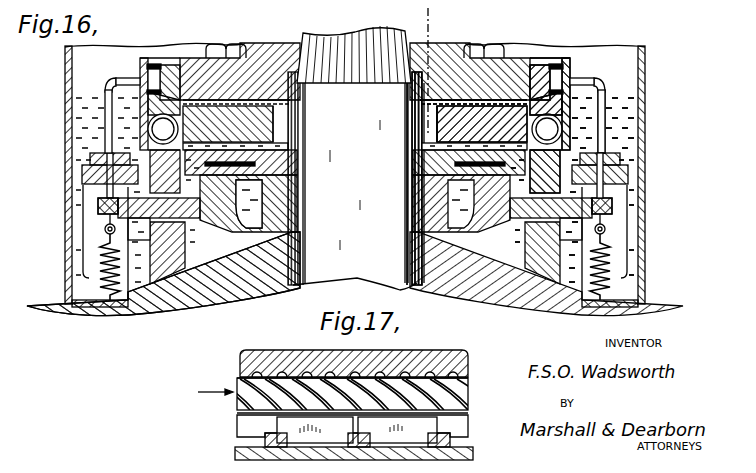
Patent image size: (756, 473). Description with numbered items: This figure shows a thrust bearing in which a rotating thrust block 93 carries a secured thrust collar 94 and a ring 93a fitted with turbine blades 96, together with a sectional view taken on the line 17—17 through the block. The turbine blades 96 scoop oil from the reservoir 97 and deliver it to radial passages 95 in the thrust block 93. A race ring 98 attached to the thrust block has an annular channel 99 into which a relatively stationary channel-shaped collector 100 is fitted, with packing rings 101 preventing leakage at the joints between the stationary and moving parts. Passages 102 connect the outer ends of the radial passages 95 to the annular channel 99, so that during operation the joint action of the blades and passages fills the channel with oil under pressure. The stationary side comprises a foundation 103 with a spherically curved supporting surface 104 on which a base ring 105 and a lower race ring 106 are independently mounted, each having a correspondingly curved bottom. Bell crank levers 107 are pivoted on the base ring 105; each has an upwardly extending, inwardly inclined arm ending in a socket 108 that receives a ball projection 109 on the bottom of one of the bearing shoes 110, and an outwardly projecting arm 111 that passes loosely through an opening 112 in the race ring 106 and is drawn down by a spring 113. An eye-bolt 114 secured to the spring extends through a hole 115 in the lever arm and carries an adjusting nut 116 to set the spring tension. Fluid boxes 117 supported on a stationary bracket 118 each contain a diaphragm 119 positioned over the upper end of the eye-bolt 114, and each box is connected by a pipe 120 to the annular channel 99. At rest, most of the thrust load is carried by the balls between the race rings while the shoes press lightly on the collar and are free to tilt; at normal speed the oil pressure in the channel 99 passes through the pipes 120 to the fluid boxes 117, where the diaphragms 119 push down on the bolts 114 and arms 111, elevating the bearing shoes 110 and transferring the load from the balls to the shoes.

In FIG. 16, the thrust block 93 is at (503, 62).
In FIG. 17, the thrust block 93 is at (412, 362).
In FIG. 16, the ring 93a is at (294, 103).
In FIG. 16, the thrust collar 94 is at (450, 128).
In FIG. 17, the thrust collar 94 is at (460, 388).
In FIG. 16, the radial passages 95 is at (427, 100).
In FIG. 17, the radial passages 95 is at (445, 368).
In FIG. 16, the turbine blades 96 is at (437, 113).
In FIG. 17, the turbine blades 96 is at (455, 398).
In FIG. 16, the reservoir 97 is at (598, 113).
In FIG. 16, the race ring 98 is at (620, 100).
In FIG. 16, the annular channel 99 is at (565, 70).
In FIG. 16, the channel-shaped collector 100 is at (567, 92).
In FIG. 16, the packing rings 101 is at (592, 92).
In FIG. 16, the passages 102 is at (172, 64).
In FIG. 16, the foundation 103 is at (200, 292).
In FIG. 16, the spherically curved supporting surface 104 is at (232, 292).
In FIG. 16, the base ring 105 is at (425, 220).
In FIG. 16, the race ring 106 is at (620, 272).
In FIG. 16, the bell crank levers 107 is at (425, 205).
In FIG. 17, the bell crank levers 107 is at (268, 438).
In FIG. 16, the socket 108 is at (467, 187).
In FIG. 16, the ball projection 109 is at (463, 172).
In FIG. 16, the bearing shoes 110 is at (440, 153).
In FIG. 17, the bearing shoes 110 is at (452, 424).
In FIG. 16, the outwardly projecting arm 111 is at (98, 204).
In FIG. 16, the opening 112 is at (562, 155).
In FIG. 16, the spring 113 is at (98, 252).
In FIG. 16, the eye-bolt 114 is at (605, 218).
In FIG. 16, the hole 115 is at (615, 207).
In FIG. 16, the adjusting nut 116 is at (612, 198).
In FIG. 16, the fluid boxes 117 is at (84, 172).
In FIG. 16, the stationary bracket 118 is at (617, 238).
In FIG. 16, the diaphragm 119 is at (623, 160).
In FIG. 16, the pipe 120 is at (105, 118).
In FIG. 16, the section line 17 is at (422, 22).